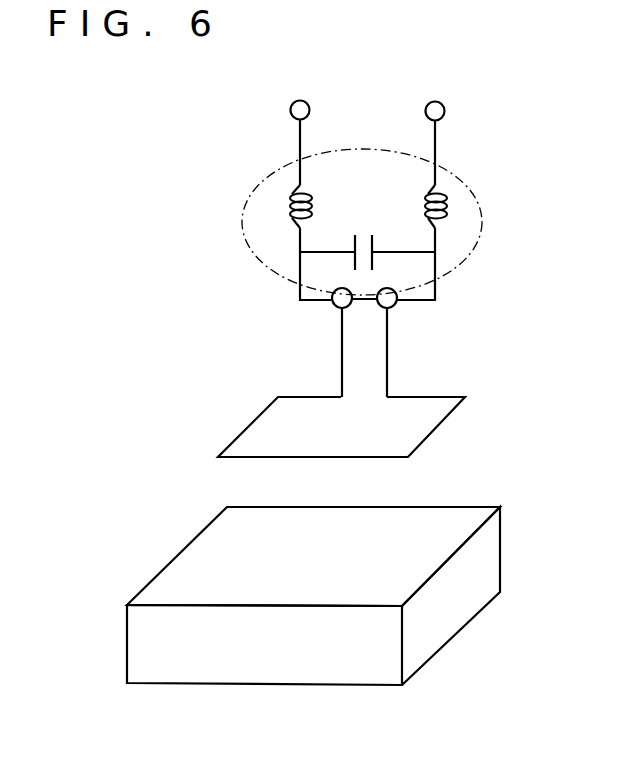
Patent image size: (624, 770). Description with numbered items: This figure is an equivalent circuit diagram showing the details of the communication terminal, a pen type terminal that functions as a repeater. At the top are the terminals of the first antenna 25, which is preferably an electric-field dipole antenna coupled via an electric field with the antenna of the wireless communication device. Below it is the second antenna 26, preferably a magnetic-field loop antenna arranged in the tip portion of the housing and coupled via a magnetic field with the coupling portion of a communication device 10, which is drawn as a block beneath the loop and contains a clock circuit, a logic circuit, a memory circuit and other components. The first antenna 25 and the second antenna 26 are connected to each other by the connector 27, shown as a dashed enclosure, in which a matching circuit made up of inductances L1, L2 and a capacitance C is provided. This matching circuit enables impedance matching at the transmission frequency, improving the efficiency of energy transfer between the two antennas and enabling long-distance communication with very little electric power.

The communication device 10 is at (435, 507).
The first antenna 25 is at (368, 102).
The second antenna 26 is at (437, 396).
The connector 27 is at (453, 177).
The inductance L1 is at (285, 206).
The inductance L2 is at (450, 206).
The capacitance C is at (367, 236).